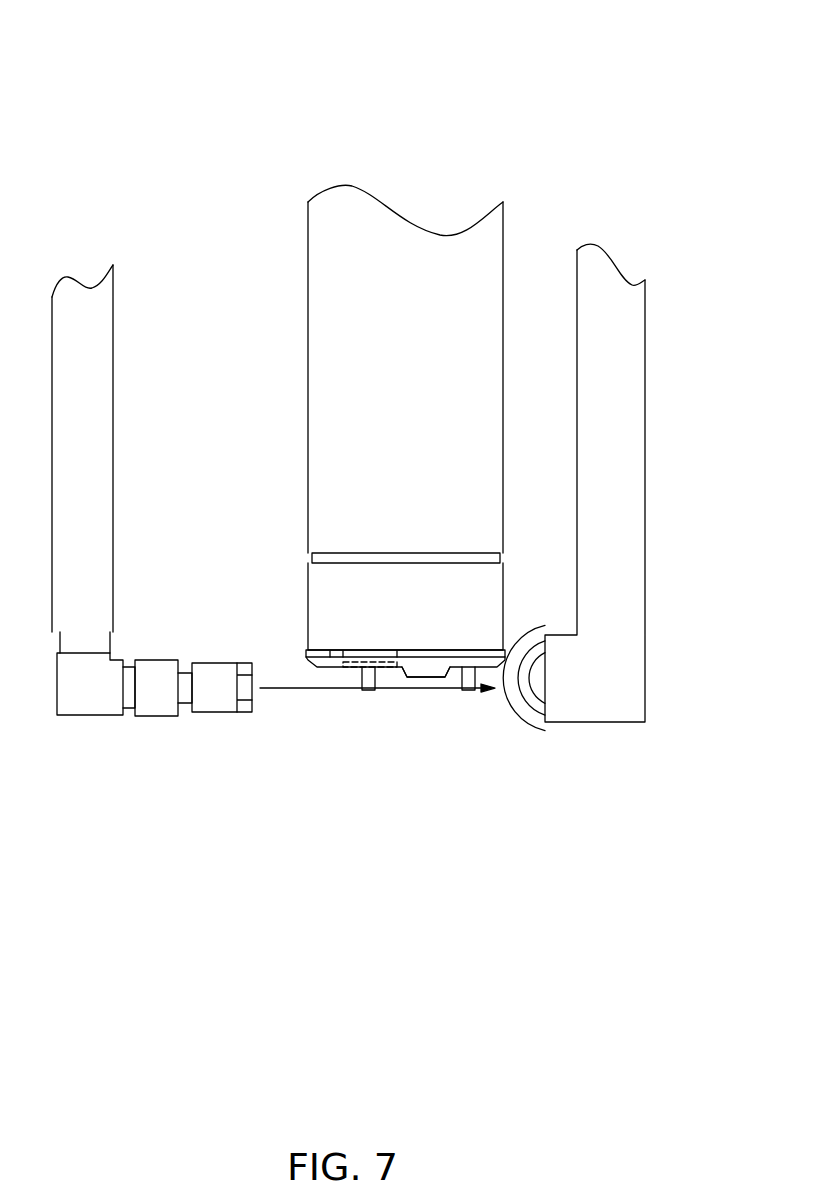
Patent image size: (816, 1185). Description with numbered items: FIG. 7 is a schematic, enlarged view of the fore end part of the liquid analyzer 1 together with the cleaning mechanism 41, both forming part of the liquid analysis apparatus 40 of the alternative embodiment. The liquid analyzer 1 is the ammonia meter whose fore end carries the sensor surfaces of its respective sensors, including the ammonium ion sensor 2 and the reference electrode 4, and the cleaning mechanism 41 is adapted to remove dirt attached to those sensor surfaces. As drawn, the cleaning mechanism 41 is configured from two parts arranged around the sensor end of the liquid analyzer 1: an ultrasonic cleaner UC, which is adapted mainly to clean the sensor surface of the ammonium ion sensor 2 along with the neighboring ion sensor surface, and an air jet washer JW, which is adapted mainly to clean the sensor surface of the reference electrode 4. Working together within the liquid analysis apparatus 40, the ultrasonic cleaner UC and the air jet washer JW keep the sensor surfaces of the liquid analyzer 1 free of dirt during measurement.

The liquid analyzer 1 is at (445, 200).
The ammonium ion sensor 2 is at (428, 660).
The reference electrode 4 is at (370, 660).
The liquid analysis apparatus 40 is at (160, 118).
The cleaning mechanism 41 is at (384, 580).
The air jet washer JW is at (255, 743).
The ultrasonic cleaner UC is at (518, 757).